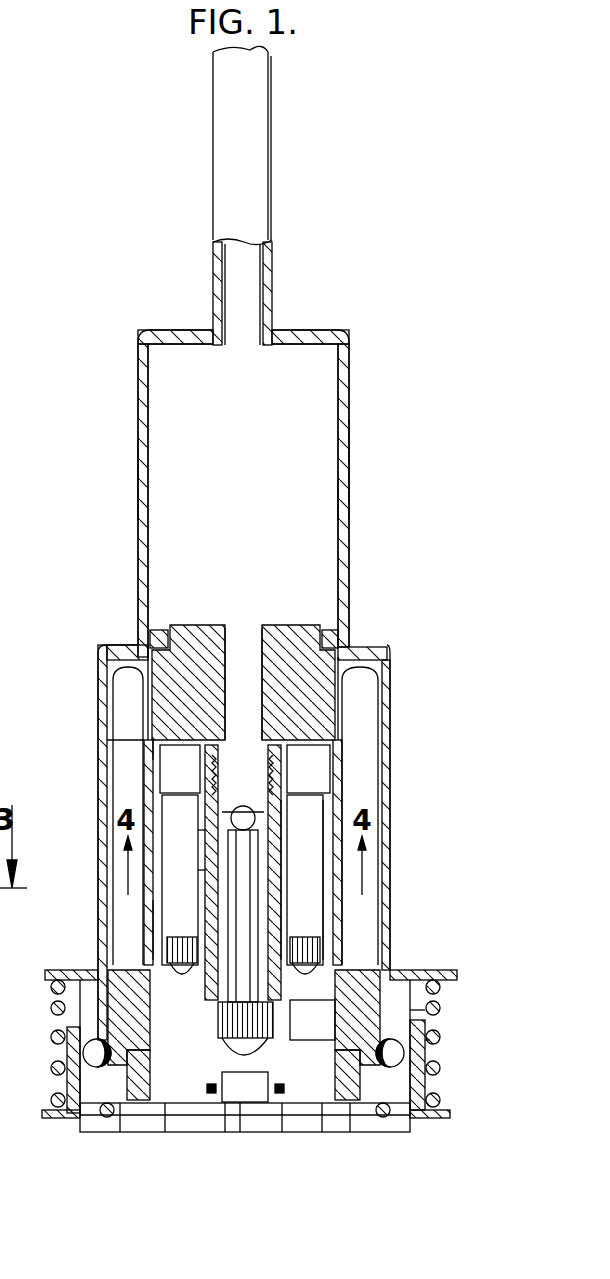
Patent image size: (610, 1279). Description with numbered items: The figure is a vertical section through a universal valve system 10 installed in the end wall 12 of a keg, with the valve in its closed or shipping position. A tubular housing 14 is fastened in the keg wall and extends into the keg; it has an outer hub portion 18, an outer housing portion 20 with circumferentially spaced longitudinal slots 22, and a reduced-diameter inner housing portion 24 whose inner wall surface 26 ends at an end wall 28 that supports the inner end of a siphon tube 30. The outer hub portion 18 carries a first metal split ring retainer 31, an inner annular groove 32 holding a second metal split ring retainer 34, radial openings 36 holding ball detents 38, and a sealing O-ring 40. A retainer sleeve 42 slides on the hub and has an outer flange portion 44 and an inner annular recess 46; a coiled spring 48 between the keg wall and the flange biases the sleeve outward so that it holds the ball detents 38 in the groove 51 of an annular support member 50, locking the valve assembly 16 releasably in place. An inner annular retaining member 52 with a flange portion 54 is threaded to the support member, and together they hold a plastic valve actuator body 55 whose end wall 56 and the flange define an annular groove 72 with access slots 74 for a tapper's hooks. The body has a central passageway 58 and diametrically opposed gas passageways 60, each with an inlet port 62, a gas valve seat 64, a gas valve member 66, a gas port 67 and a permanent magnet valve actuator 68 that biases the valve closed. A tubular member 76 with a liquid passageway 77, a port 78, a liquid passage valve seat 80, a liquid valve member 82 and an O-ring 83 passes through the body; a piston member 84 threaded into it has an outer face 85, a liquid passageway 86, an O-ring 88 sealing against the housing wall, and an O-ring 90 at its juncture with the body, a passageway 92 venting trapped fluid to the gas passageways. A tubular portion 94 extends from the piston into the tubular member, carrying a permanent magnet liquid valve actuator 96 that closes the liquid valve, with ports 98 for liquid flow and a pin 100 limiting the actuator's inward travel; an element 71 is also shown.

The universal valve system 10 is at (120, 492).
The end wall of keg 12 is at (420, 972).
The tubular housing 14 is at (355, 472).
The valve assembly 16 is at (338, 766).
The outer hub portion 18 is at (415, 995).
The outer housing portion 20 is at (390, 680).
The slots 22 is at (370, 652).
The inner housing portion 24 is at (352, 542).
The inner wall surface 26 is at (330, 497).
The end wall 28 is at (300, 332).
The siphon tube 30 is at (258, 148).
The first metal split ring retainer 31 is at (72, 1125).
The inner annular groove 32 is at (105, 1120).
The second metal split ring retainer 34 is at (128, 1120).
The radial openings 36 is at (83, 1052).
The ball detents 38 is at (67, 1085).
The sealing O-ring 40 is at (66, 1012).
The retainer sleeve 42 is at (425, 1052).
The outer flange portion 44 is at (442, 1118).
The inner annular recess 46 is at (432, 1080).
The coiled spring 48 is at (58, 1108).
The annular support member 50 is at (128, 962).
The groove 51 is at (426, 1018).
The inner annular retaining member 52 is at (392, 1116).
The flange portion 54 is at (350, 1120).
The valve actuator body 55 is at (336, 900).
The end wall 56 is at (322, 1120).
The central passageway 58 is at (310, 795).
The gas passageways 60 is at (165, 790).
The inlet port 62 is at (292, 1012).
The gas valve seat 64 is at (335, 962).
The gas valve member 66 is at (330, 937).
The gas port 67 is at (160, 945).
The permanent magnet valve actuator 68 is at (310, 800).
The seat member 71 is at (152, 1060).
The annular groove 72 is at (165, 1120).
The access slots 74 is at (282, 1120).
The tubular member 76 is at (205, 845).
The liquid passageway 77 is at (205, 880).
The port 78 is at (238, 1120).
The liquid passage valve seat 80 is at (216, 1030).
The liquid valve member 82 is at (270, 1082).
The O-ring 83 is at (225, 1120).
The piston member 84 is at (190, 628).
The outer face 85 is at (340, 735).
The liquid passageway 86 is at (246, 630).
The O-ring 88 is at (150, 640).
The O-ring 90 is at (165, 752).
The passageway 92 is at (108, 740).
The tubular portion 94 is at (258, 866).
The permanent magnet liquid valve actuator 96 is at (186, 937).
The ports 98 is at (255, 830).
The pin 100 is at (243, 810).